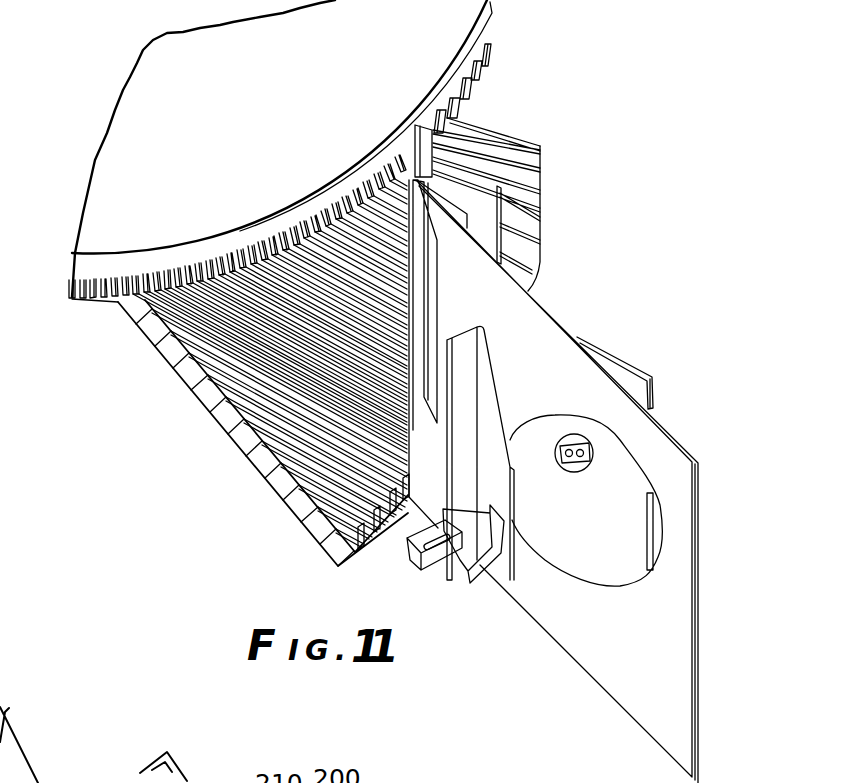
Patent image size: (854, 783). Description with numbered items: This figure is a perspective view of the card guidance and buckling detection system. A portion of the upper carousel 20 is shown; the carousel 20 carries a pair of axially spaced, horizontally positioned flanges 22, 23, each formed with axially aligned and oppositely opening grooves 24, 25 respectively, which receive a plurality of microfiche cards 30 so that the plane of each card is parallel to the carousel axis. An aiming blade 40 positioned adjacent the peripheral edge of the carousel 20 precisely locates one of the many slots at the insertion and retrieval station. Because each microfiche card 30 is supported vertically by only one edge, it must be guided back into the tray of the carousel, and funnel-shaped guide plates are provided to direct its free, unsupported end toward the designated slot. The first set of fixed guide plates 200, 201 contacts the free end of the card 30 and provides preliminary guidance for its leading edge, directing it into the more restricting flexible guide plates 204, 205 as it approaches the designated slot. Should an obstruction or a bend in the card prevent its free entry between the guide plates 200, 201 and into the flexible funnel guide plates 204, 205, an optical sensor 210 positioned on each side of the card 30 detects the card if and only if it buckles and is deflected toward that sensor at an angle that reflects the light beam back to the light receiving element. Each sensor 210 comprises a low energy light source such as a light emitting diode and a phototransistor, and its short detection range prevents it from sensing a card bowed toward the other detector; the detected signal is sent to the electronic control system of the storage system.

The carousel 20 is at (104, 132).
The flange 22 is at (485, 15).
The flange 23 is at (355, 565).
The groove 24 is at (475, 68).
The groove 25 is at (318, 455).
The microfiche card 30 is at (642, 722).
The aiming blade 40 is at (414, 131).
The guide plate 200 is at (620, 360).
The guide plate 201 is at (502, 572).
The flexible guide plate 204 is at (497, 228).
The flexible guide plate 205 is at (437, 292).
The optical sensor 210 is at (450, 563).